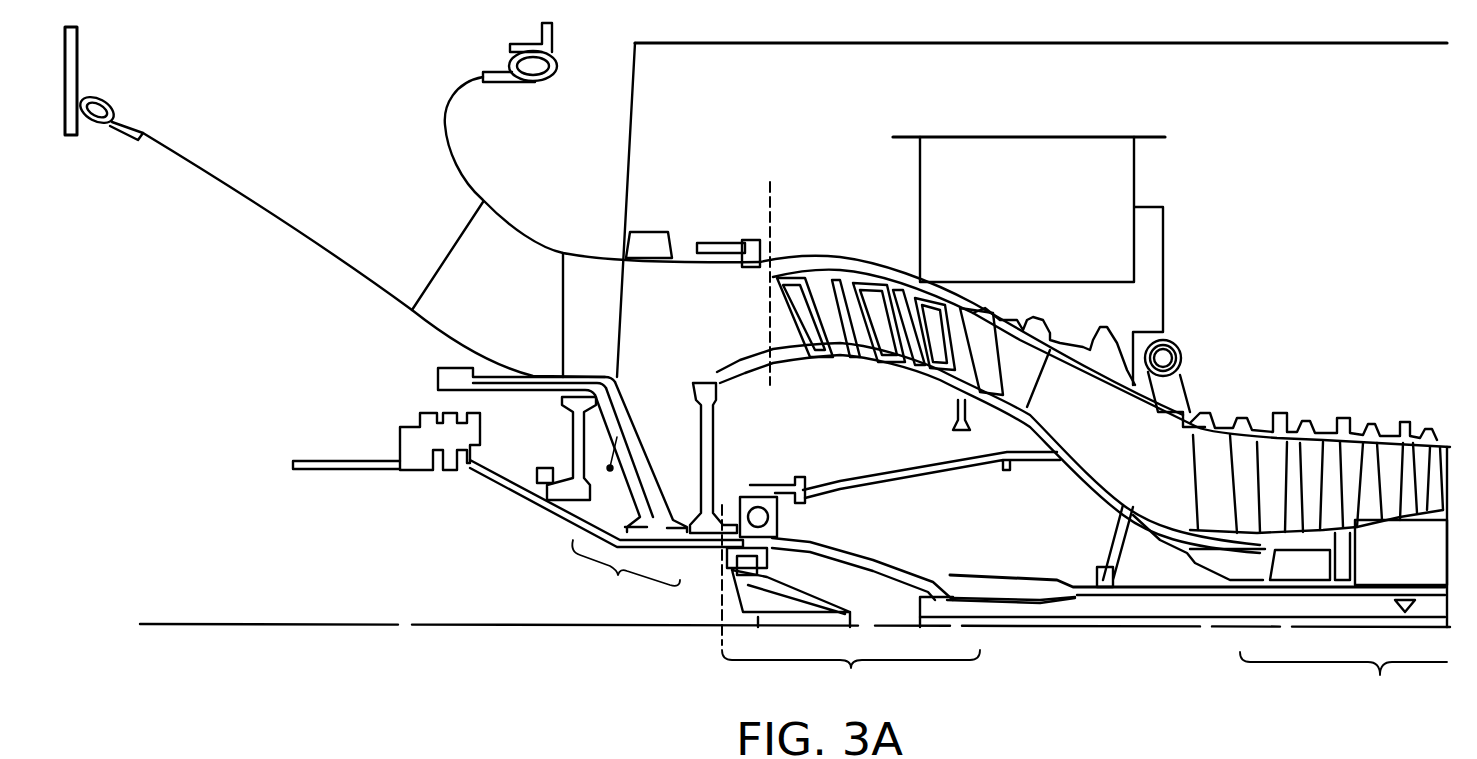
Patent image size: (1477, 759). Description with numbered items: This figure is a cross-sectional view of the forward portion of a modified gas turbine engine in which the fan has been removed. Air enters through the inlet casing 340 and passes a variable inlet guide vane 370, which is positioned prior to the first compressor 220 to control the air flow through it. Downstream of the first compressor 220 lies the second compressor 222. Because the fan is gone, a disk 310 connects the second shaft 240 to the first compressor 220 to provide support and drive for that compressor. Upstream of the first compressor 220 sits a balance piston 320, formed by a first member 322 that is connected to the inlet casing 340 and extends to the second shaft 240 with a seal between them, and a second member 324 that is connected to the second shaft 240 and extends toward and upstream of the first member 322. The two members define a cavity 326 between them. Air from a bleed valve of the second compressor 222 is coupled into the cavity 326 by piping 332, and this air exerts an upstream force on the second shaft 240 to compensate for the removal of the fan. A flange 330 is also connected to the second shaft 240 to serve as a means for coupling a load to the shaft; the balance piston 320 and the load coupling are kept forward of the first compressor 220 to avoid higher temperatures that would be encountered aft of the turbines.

The inlet casing 340 is at (237, 192).
The piping 332 is at (1248, 43).
The variable inlet guide vane 370 is at (745, 287).
The flange 330 is at (362, 457).
The second member 324 is at (571, 443).
The first member 322 is at (635, 435).
The disk 310 is at (713, 460).
The cavity 326 is at (600, 512).
The balance piston 320 is at (626, 573).
The first compressor 220 is at (851, 679).
The second shaft 240 is at (1038, 597).
The second compressor 222 is at (1318, 564).